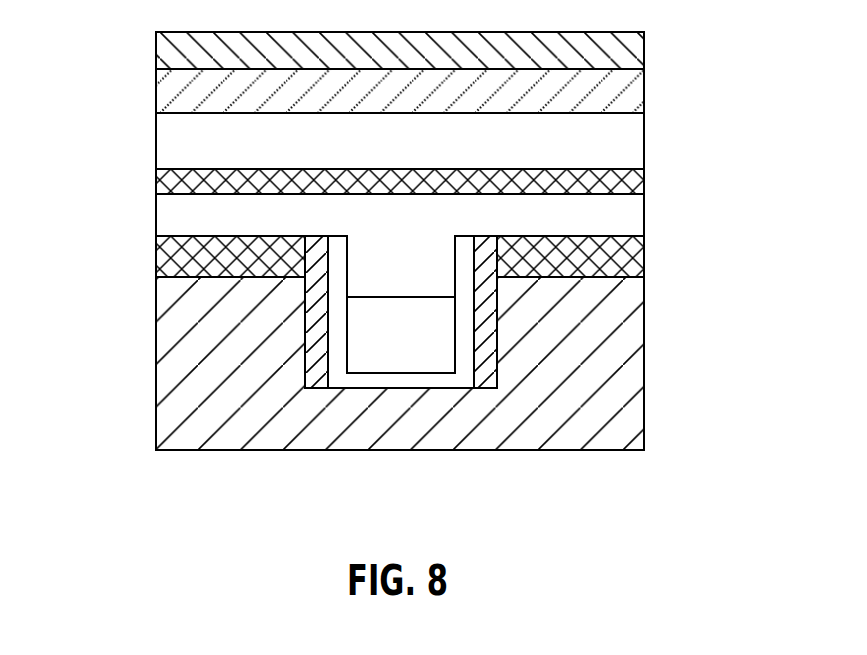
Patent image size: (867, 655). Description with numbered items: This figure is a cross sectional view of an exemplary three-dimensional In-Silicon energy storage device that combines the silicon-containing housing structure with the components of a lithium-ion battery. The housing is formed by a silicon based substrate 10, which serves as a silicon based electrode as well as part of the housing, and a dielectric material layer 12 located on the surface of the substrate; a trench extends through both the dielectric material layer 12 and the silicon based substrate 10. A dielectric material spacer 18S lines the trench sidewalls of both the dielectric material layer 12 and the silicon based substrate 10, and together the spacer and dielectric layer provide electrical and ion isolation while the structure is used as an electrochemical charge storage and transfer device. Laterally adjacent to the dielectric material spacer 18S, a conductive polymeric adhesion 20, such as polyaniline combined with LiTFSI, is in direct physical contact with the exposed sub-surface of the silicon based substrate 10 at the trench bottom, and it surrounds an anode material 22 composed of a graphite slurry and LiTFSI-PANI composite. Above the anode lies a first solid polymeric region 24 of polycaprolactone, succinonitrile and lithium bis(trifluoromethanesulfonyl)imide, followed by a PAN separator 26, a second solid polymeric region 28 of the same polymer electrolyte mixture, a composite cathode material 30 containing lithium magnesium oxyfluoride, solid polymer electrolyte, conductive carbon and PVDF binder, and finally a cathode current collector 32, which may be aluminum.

The silicon based substrate 10 is at (418, 432).
The dielectric material layer 12 is at (158, 259).
The dielectric material spacer 18S is at (312, 326).
The conductive polymeric adhesion 20 is at (462, 380).
The anode material 22 is at (418, 347).
The first solid polymeric region 24 is at (418, 254).
The PAN separator 26 is at (632, 182).
The second solid polymeric region 28 is at (415, 157).
The composite cathode material 30 is at (415, 104).
The cathode current collector 32 is at (632, 49).